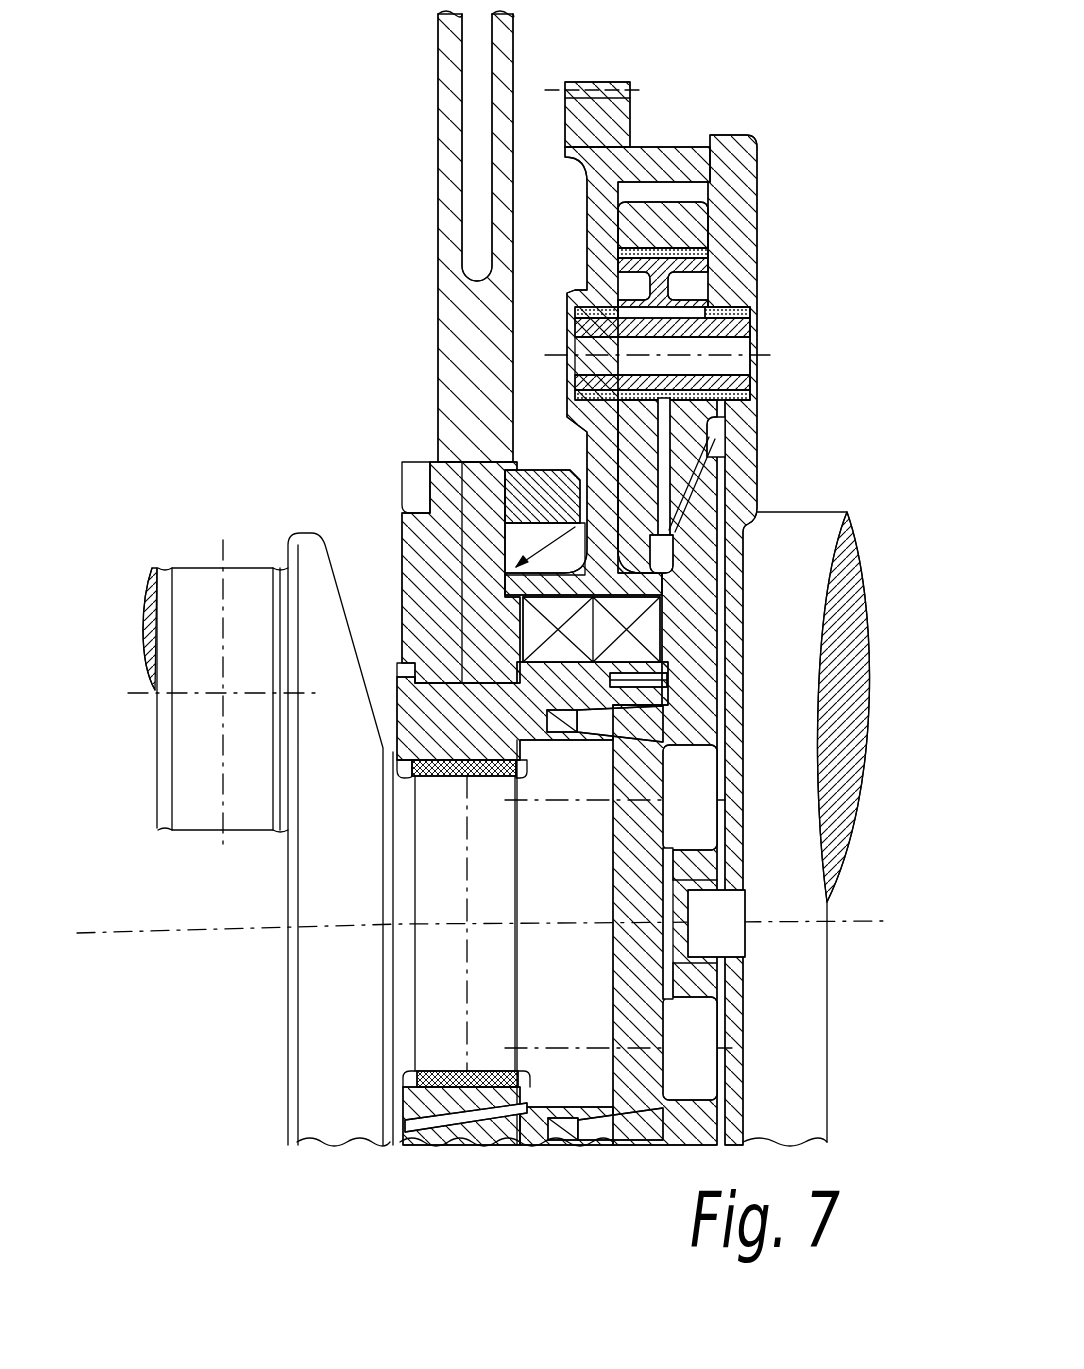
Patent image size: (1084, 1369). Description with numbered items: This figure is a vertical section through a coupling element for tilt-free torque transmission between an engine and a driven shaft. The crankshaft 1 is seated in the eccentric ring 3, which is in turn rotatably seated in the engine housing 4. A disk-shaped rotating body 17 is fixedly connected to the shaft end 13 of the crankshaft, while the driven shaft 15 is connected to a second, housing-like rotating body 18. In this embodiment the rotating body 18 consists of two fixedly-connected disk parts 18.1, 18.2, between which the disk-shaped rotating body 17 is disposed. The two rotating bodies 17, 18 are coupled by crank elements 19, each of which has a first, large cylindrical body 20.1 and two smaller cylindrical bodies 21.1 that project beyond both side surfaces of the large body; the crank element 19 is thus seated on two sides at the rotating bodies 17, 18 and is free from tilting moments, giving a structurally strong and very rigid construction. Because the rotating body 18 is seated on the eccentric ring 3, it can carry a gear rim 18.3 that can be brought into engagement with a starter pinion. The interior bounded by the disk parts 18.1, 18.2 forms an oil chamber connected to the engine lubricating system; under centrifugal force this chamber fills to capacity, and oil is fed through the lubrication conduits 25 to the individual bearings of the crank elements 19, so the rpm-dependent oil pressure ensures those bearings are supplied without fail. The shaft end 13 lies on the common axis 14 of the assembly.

The crankshaft 1 is at (262, 538).
The eccentric ring 3 is at (418, 717).
The engine housing 4 is at (440, 468).
The shaft end 13 is at (563, 1070).
The axis of rotation 14 is at (148, 936).
The driven shaft 15 is at (817, 527).
The disk-shaped rotating body 17 is at (700, 232).
The rotating body 18 is at (692, 572).
The disk part 18.1 is at (750, 173).
The disk part 18.2 is at (595, 203).
The gear rim 18.3 is at (627, 101).
The crank element 19 is at (768, 329).
The large cylindrical body 20.1 is at (700, 284).
The cylindrical body 21.1 is at (577, 391).
The lubrication conduit 25 is at (675, 500).